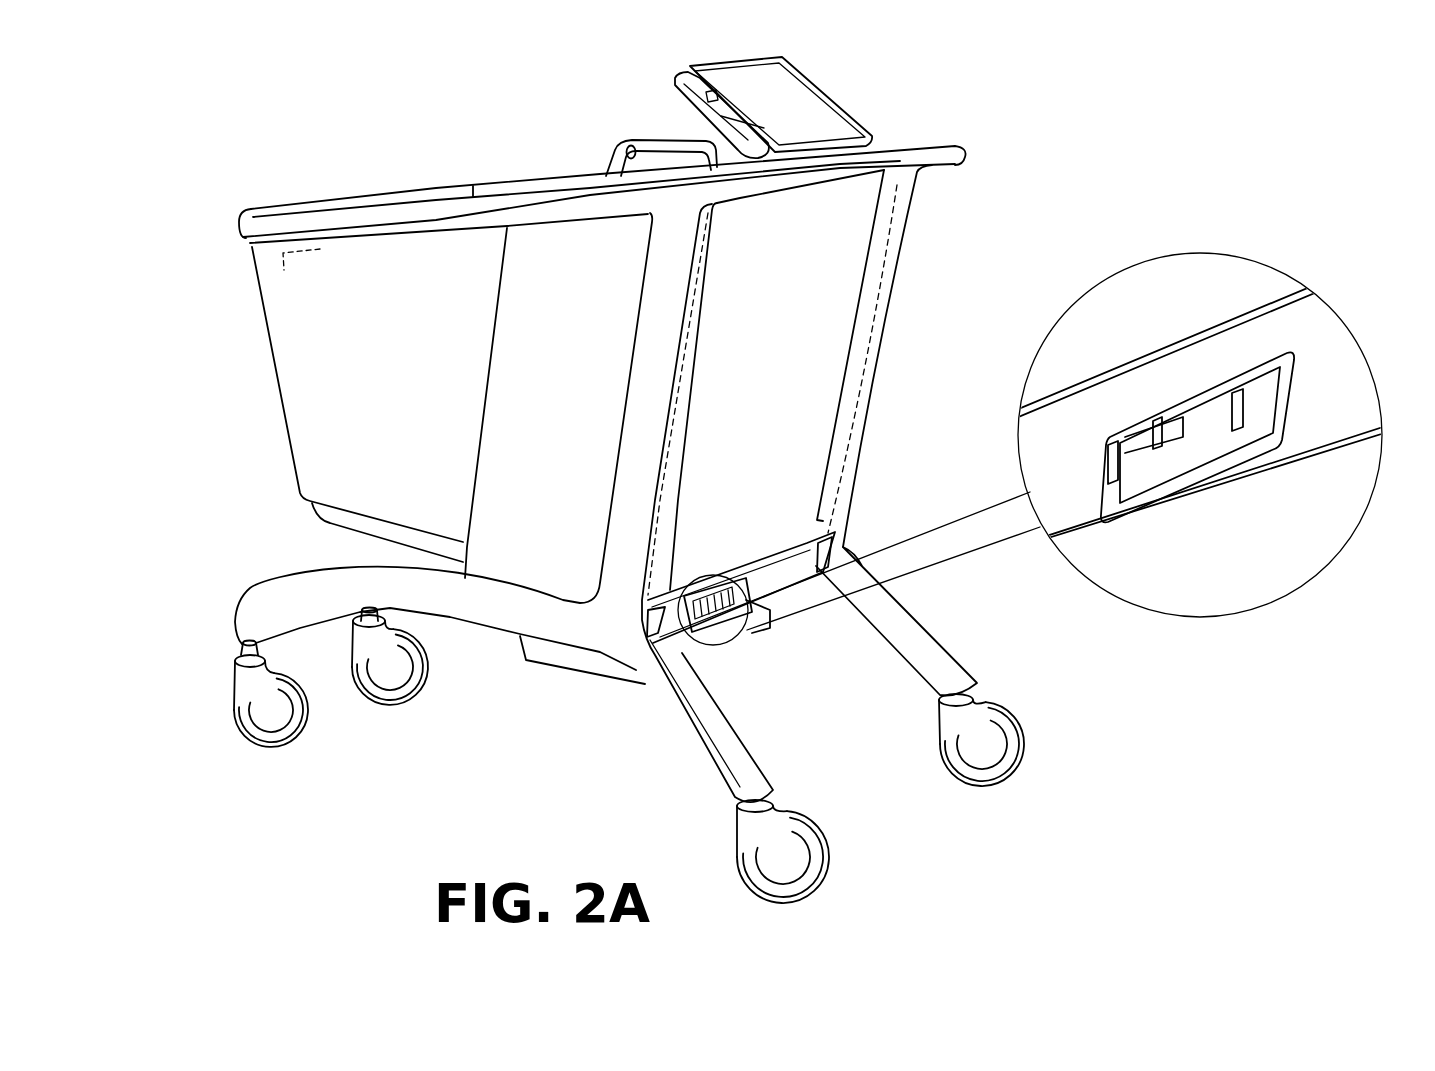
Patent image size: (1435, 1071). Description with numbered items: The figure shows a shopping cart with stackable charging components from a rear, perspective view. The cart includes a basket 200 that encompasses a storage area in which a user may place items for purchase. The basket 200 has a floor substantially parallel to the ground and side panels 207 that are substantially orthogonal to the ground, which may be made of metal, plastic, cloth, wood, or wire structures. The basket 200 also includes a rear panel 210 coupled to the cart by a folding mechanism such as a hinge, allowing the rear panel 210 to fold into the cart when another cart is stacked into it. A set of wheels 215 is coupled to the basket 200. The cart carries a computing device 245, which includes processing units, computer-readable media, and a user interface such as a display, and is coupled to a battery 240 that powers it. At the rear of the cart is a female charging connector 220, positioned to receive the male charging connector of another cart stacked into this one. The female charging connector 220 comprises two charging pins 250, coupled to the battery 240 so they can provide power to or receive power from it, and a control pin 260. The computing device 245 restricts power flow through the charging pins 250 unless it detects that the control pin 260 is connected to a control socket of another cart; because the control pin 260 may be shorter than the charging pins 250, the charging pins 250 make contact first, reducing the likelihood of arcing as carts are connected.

The basket 200 is at (410, 148).
The side panels 207 is at (308, 354).
The rear panel 210 is at (822, 306).
The wheels 215 is at (260, 764).
The female charging connector 220 is at (722, 622).
The battery 240 is at (586, 687).
The computing device 245 is at (873, 109).
The charging pins 250 is at (1124, 502).
The control pin 260 is at (1160, 408).